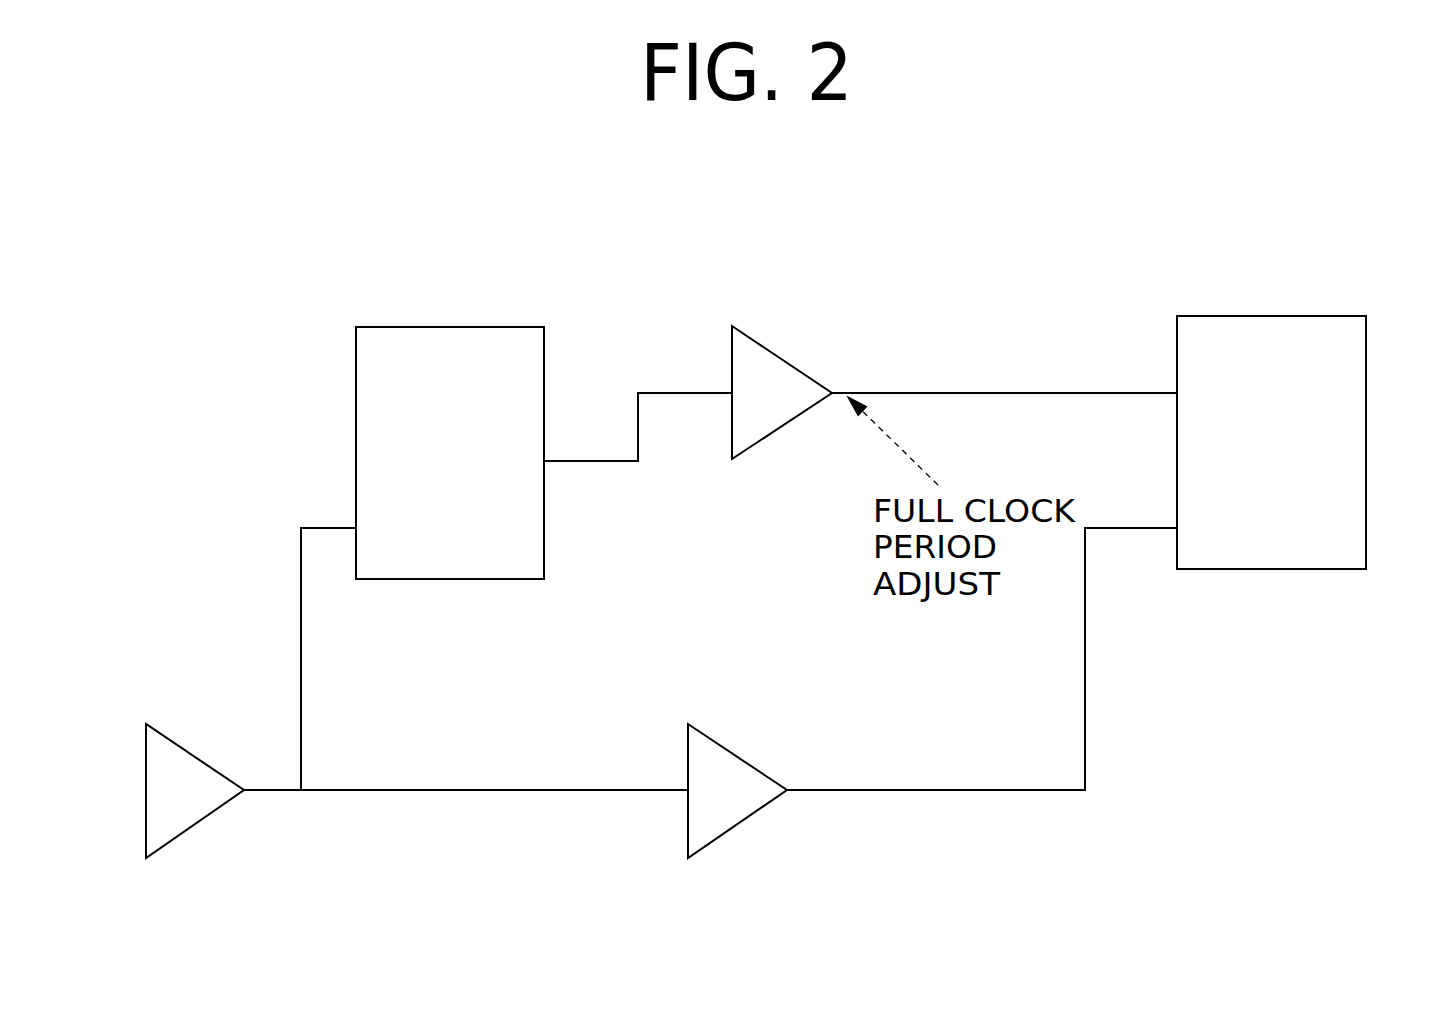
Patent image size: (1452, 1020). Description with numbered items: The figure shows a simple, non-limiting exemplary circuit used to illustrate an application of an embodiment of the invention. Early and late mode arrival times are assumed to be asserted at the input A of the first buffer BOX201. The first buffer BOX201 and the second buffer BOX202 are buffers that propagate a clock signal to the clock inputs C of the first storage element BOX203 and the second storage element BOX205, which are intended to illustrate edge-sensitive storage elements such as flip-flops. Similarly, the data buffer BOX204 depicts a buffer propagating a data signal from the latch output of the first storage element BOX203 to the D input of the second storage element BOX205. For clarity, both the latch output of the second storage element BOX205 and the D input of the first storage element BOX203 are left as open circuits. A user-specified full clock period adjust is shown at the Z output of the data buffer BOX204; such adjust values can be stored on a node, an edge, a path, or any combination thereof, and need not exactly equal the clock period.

The box 201 BOX201 is at (186, 703).
The box 202 BOX202 is at (741, 705).
The box 203 BOX203 is at (437, 306).
The box 204 BOX204 is at (795, 330).
The box 205 BOX205 is at (1314, 298).